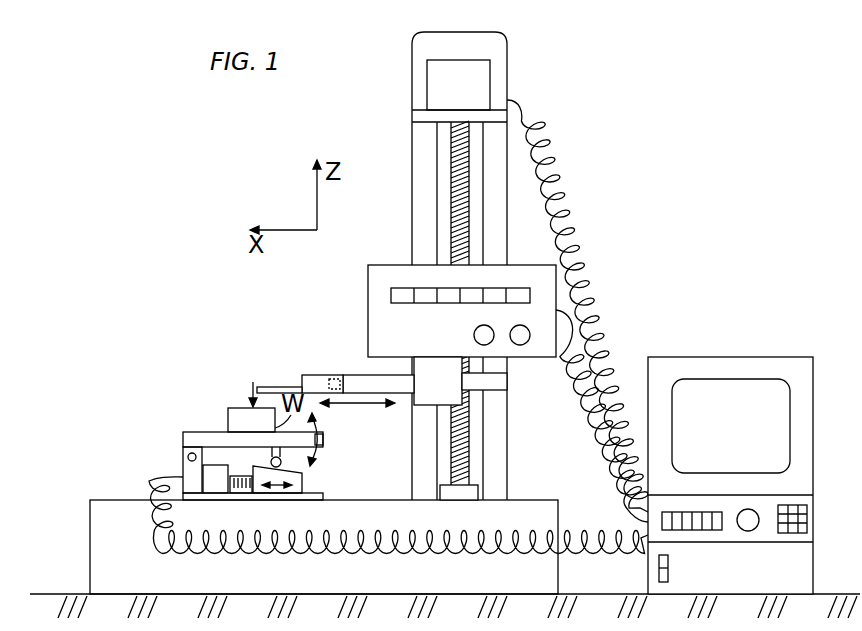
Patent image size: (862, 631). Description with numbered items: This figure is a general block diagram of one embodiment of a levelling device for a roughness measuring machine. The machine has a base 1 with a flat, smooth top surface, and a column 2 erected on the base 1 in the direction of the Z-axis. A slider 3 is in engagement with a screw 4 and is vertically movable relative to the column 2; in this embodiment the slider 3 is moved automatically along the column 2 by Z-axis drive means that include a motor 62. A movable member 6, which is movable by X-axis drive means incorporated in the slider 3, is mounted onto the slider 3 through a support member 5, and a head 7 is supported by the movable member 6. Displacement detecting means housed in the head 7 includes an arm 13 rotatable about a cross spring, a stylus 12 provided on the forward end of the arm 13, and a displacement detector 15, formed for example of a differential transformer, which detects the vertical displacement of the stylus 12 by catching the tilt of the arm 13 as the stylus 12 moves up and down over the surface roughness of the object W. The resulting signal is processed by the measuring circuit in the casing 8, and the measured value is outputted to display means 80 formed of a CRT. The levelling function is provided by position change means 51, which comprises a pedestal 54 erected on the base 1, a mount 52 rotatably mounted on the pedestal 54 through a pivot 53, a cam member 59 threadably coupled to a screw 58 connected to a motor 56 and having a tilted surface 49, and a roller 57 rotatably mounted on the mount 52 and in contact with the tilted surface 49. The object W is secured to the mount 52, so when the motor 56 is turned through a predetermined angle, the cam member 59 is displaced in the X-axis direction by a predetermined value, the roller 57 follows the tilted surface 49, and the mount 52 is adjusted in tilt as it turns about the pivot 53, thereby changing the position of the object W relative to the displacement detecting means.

The base 1 is at (98, 533).
The column 2 is at (412, 170).
The slider 3 is at (383, 270).
The screw 4 is at (455, 206).
The support member 5 is at (458, 400).
The movable member 6 is at (360, 380).
The head 7 is at (312, 382).
The casing 8 is at (730, 366).
The stylus 12 is at (255, 382).
The arm 13 is at (276, 386).
The displacement detector 15 is at (335, 390).
The tilted surface 49 is at (277, 494).
The position change means 51 is at (218, 481).
The mount 52 is at (242, 476).
The pivot 53 is at (183, 455).
The pedestal 54 is at (190, 477).
The motor 56 is at (215, 485).
The roller 57 is at (305, 468).
The screw 58 is at (183, 438).
The cam member 59 is at (304, 488).
The motor 62 is at (485, 85).
The display means 80 is at (778, 457).